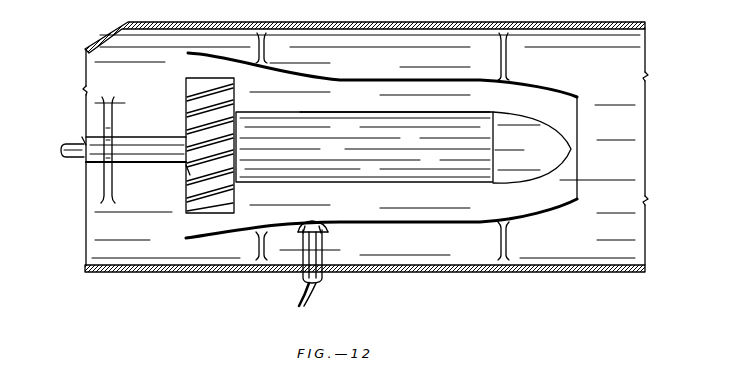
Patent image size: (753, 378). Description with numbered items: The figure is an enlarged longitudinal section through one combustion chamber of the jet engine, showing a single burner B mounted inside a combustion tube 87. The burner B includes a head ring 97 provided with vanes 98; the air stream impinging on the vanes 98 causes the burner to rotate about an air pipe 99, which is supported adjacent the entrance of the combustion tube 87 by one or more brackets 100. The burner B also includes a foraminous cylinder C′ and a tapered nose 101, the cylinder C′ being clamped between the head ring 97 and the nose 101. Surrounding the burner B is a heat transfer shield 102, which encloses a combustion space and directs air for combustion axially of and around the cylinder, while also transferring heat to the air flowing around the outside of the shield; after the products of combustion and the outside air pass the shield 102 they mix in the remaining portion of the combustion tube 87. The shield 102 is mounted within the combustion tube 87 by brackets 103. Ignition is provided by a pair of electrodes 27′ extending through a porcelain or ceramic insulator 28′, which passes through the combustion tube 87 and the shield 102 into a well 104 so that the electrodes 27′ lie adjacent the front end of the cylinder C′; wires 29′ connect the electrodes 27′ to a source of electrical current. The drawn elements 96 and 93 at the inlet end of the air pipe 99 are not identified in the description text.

The combustion tube 87 is at (465, 22).
The heat transfer shield 102 is at (390, 79).
The brackets 103 is at (268, 52).
The burner B is at (412, 183).
The foraminous cylinder C′ is at (408, 111).
The tapered nose 101 is at (523, 126).
The vanes 98 is at (186, 105).
The air pipe 99 is at (145, 142).
The head ring 97 is at (188, 170).
The brackets 100 is at (133, 80).
The shaft seal 96 is at (92, 135).
The pipe end 93 is at (66, 156).
The insulator 28′ is at (322, 258).
The well 104 is at (330, 230).
The electrodes 27′ is at (320, 226).
The wires 29′ is at (318, 294).